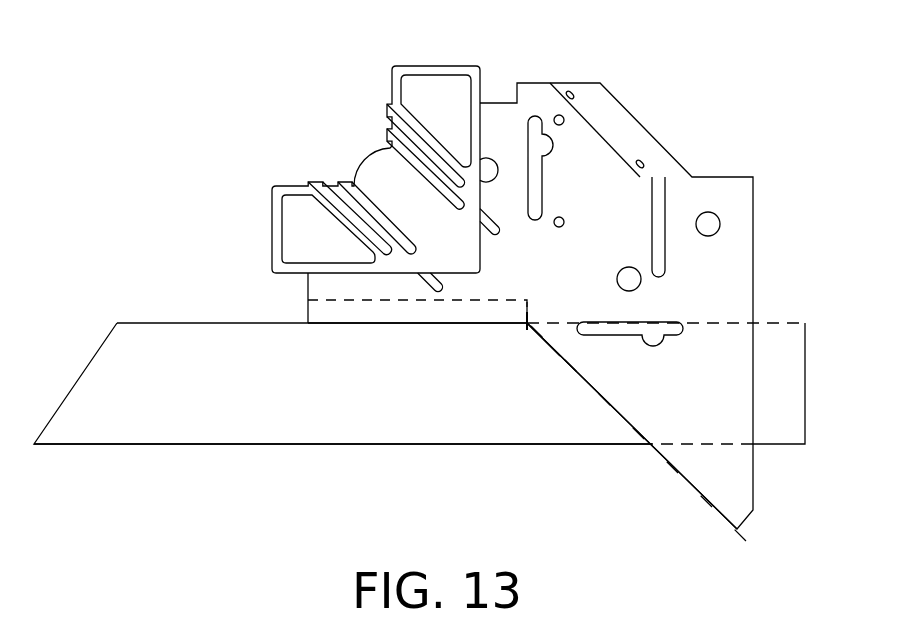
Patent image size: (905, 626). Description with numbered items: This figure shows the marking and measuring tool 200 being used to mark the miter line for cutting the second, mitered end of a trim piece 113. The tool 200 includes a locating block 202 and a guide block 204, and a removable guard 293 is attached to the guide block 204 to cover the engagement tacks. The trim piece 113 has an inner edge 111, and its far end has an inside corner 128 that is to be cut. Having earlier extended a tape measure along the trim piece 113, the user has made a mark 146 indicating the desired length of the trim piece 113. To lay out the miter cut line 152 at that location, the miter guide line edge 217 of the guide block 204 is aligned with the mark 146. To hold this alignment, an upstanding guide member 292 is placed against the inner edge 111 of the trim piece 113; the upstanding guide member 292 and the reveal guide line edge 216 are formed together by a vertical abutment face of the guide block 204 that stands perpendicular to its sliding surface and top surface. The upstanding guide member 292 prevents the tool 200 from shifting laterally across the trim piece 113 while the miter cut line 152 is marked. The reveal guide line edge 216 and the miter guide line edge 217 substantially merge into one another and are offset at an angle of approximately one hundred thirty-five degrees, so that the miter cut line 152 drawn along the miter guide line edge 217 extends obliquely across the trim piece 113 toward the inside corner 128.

The inner edge 111 is at (168, 333).
The trim piece 113 is at (205, 433).
The inside corner 128 is at (527, 325).
The mark 146 is at (525, 325).
The miter cut line 152 is at (563, 362).
The marking and measuring tool 200 is at (386, 169).
The locating block 202 is at (437, 85).
The guide block 204 is at (743, 252).
The reveal guide line edge 216 is at (370, 323).
The miter guide line edge 217 is at (693, 488).
The upstanding guide member 292 is at (308, 312).
The removable guard 293 is at (663, 112).